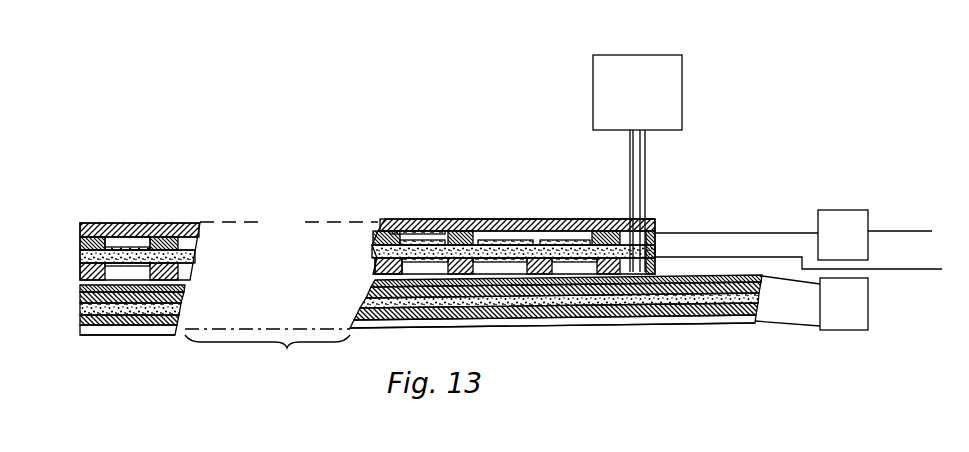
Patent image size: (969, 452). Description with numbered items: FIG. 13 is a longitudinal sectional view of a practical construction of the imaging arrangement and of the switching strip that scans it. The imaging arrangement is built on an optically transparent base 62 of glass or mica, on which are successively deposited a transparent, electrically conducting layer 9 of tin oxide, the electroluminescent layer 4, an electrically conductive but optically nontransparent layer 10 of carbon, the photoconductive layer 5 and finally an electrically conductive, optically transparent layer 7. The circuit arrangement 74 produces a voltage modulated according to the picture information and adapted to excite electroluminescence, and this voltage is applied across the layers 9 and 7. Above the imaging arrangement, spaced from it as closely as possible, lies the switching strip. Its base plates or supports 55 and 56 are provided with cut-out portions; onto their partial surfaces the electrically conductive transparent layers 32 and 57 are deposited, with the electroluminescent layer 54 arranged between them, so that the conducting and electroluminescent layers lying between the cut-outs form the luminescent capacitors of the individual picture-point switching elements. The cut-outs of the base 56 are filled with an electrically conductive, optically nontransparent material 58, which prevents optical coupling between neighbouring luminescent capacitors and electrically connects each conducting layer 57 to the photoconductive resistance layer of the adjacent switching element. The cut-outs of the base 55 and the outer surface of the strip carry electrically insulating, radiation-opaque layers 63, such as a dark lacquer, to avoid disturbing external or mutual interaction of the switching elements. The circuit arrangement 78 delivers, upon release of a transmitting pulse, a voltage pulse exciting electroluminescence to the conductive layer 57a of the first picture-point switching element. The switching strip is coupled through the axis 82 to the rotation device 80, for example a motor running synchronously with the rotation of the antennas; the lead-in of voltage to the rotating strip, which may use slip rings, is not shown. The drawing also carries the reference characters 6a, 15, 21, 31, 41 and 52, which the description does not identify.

The electroluminescent layer 4 is at (178, 317).
The photoconductive layer 5 is at (181, 298).
The spacer strip 6a is at (553, 243).
The electrically conductive, optically transparent layer 7 is at (80, 289).
The transparent, electrically conducting layer 9 is at (94, 330).
The electrically conductive, optically nontransparent layer 10 is at (80, 306).
The display panel 15 is at (393, 219).
The lead 21 is at (915, 270).
The lead 31 is at (741, 232).
The electrically conductive, transparent layer 32 is at (440, 248).
The glass plate 41 is at (428, 223).
The electrode 52 is at (511, 223).
The electroluminescent layer 54 is at (374, 253).
The base plate 55 is at (80, 272).
The base plate 56 is at (490, 231).
The electrically conductive, transparent layer 57 is at (138, 236).
The conductive layer 57a is at (592, 223).
The electrically conductive, optically nontransparent material 58 is at (373, 238).
The optically transparent base 62 is at (157, 330).
The electrically insulating layers 63 is at (90, 232).
The circuit arrangement 74 is at (855, 320).
The circuit arrangement 78 is at (839, 215).
The rotation device 80 is at (675, 70).
The axis 82 is at (638, 166).